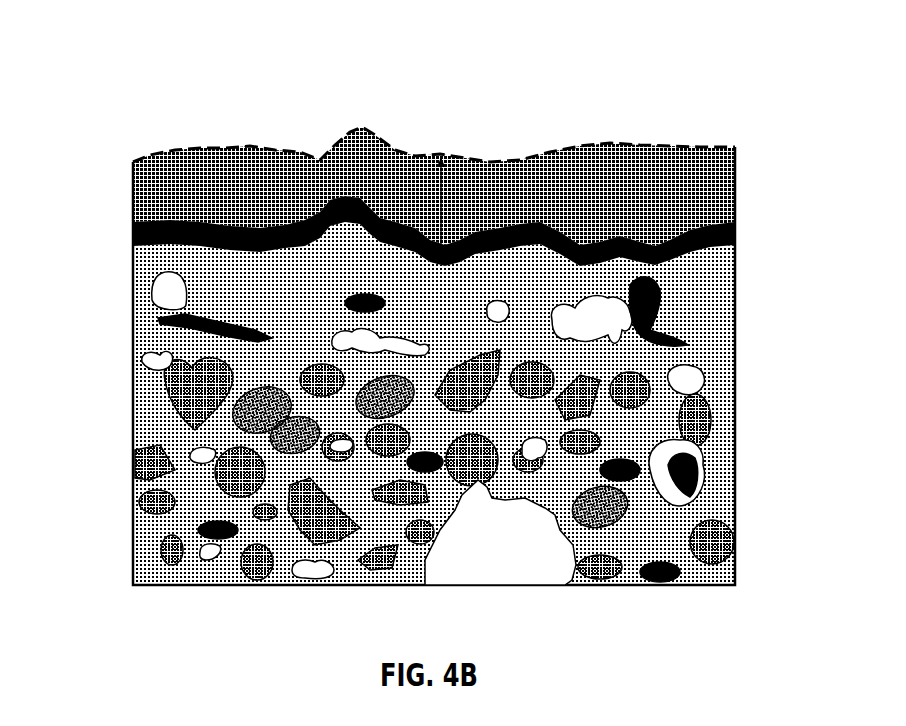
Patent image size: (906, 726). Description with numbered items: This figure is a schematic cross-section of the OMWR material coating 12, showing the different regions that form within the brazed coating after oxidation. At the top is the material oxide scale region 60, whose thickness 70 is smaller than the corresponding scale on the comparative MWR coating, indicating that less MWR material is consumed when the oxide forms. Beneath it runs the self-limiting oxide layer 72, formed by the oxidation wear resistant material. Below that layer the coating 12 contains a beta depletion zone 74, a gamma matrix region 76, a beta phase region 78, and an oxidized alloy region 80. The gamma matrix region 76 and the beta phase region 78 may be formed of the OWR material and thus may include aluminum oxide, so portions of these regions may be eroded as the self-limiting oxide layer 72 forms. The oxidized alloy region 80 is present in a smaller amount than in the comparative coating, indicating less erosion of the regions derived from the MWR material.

The OMWR material coating 12 is at (143, 80).
The material oxide scale region 60 is at (717, 180).
The thickness 70 is at (445, 193).
The self-limiting oxide layer 72 is at (737, 228).
The beta depletion zone 74 is at (155, 315).
The gamma matrix region 76 is at (705, 370).
The beta phase region 78 is at (155, 405).
The oxidized alloy region 80 is at (538, 565).